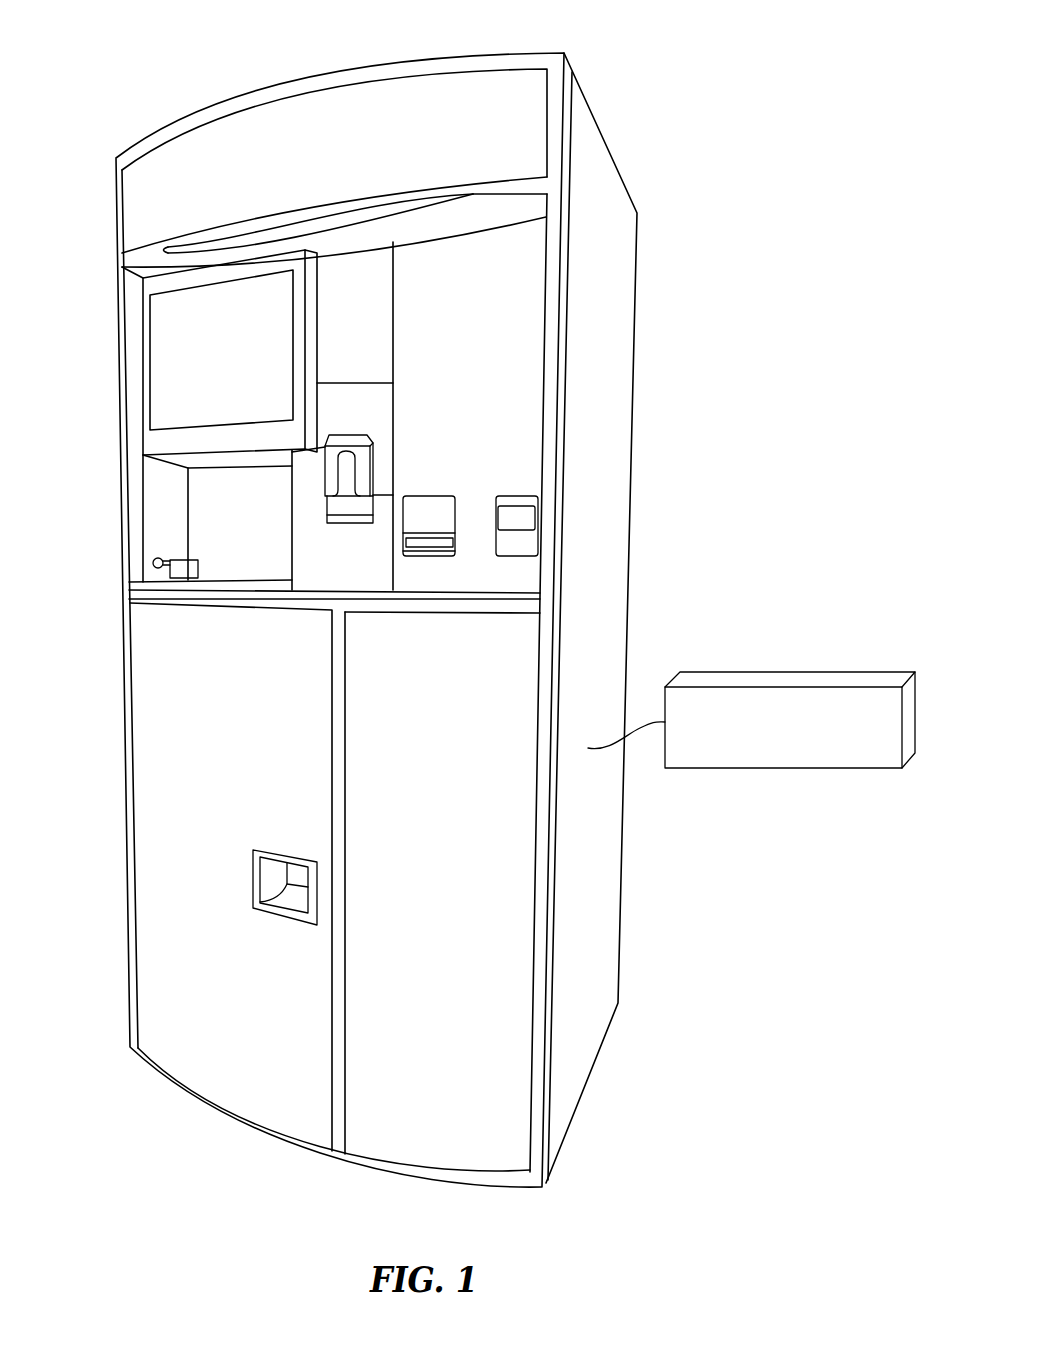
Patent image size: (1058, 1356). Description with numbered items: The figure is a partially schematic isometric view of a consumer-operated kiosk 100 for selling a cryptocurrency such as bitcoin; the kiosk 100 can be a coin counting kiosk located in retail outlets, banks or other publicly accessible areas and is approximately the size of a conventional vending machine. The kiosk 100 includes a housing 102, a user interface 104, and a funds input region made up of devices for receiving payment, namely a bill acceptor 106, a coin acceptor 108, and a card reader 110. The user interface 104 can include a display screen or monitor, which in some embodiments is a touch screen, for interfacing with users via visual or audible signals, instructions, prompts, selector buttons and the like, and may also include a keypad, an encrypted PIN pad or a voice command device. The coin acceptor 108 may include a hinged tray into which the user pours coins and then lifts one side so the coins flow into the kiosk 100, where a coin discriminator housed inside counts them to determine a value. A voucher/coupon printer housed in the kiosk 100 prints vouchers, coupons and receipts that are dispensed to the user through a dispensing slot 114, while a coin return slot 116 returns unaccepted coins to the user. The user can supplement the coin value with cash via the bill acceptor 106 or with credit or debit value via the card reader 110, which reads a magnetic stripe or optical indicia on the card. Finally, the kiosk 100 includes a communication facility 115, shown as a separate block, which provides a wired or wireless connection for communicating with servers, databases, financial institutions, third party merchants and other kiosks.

The consumer-operated kiosk 100 is at (113, 91).
The housing 102 is at (614, 297).
The user interface 104 is at (165, 367).
The bill acceptor 106 is at (538, 518).
The coin acceptor 108 is at (188, 573).
The card reader 110 is at (455, 546).
The dispensing slot 114 is at (375, 452).
The communication facility 115 is at (793, 672).
The coin return slot 116 is at (252, 879).